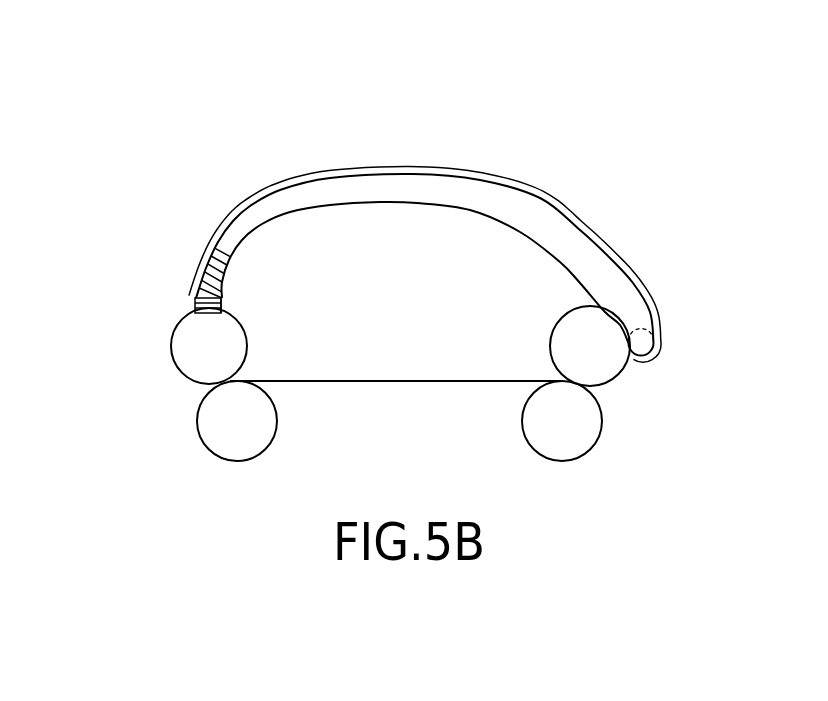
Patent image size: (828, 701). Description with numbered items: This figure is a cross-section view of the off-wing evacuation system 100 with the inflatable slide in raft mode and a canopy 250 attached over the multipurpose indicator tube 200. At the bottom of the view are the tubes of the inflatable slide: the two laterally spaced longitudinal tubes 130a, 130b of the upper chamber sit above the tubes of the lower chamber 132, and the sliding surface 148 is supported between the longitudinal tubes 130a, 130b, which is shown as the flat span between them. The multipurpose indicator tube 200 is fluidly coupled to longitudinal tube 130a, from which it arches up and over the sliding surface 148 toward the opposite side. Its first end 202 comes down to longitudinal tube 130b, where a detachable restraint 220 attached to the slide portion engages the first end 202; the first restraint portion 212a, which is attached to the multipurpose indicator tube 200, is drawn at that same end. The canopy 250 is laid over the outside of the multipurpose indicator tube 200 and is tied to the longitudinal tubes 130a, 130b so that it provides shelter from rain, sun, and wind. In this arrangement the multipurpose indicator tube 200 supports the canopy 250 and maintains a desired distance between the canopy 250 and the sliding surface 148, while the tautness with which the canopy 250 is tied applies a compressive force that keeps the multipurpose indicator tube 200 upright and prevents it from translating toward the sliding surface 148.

The off-wing evacuation system 100 is at (120, 177).
The canopy 250 is at (537, 196).
The multipurpose indicator tube 200 is at (606, 275).
The first end 202 is at (194, 296).
The first restraint portion 212a is at (194, 305).
The detachable restraint 220 is at (222, 302).
The sliding surface 148 is at (403, 381).
The longitudinal tube 130b is at (196, 353).
The longitudinal tube 130a is at (607, 366).
The lower chamber 132 is at (217, 430).